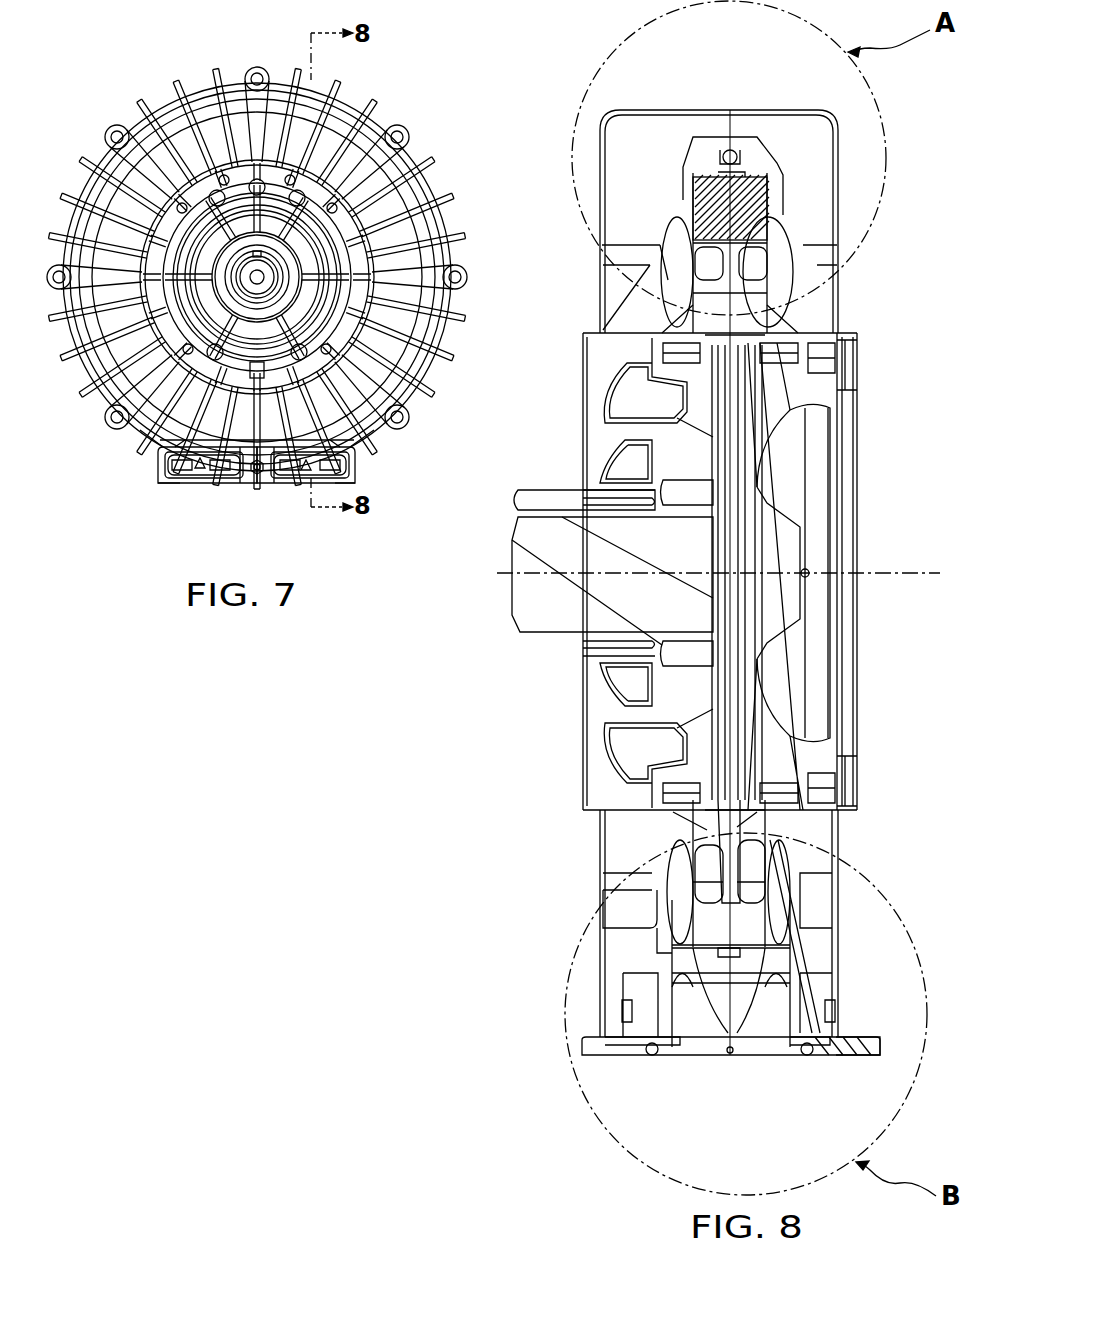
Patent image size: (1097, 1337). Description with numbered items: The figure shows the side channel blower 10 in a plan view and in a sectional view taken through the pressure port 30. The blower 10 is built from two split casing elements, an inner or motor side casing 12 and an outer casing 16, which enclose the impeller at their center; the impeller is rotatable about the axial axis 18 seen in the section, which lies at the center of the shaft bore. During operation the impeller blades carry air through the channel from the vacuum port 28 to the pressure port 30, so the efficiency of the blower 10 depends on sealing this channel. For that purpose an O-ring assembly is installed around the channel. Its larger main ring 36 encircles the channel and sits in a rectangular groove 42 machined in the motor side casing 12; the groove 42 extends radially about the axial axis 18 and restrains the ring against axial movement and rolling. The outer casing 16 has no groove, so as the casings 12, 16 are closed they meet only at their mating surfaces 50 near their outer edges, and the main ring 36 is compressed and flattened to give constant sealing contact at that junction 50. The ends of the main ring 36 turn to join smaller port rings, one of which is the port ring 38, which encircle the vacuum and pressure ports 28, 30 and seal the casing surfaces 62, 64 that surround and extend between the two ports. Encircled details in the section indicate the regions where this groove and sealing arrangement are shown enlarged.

In FIG. 7, the side channel blower 10 is at (400, 88).
In FIG. 8, the side channel blower 10 is at (887, 307).
In FIG. 8, the inner casing element 12 is at (838, 688).
In FIG. 7, the outer casing 16 is at (98, 128).
In FIG. 8, the outer casing 16 is at (540, 533).
In FIG. 8, the axial axis 18 is at (898, 572).
In FIG. 7, the vacuum port 28 is at (195, 486).
In FIG. 7, the pressure port 30 is at (290, 486).
In FIG. 8, the pressure port 30 is at (698, 1022).
In FIG. 8, the main ring 36 is at (722, 155).
In FIG. 8, the port ring 38 is at (812, 1045).
In FIG. 8, the rectangular groove 42 is at (735, 158).
In FIG. 8, the mating surfaces 50 is at (728, 150).
In FIG. 7, the inner surface adjacent ports 62 is at (162, 483).
In FIG. 7, the inner surface adjacent ports 64 is at (350, 483).
In FIG. 8, the inner surface adjacent ports 64 is at (860, 1055).